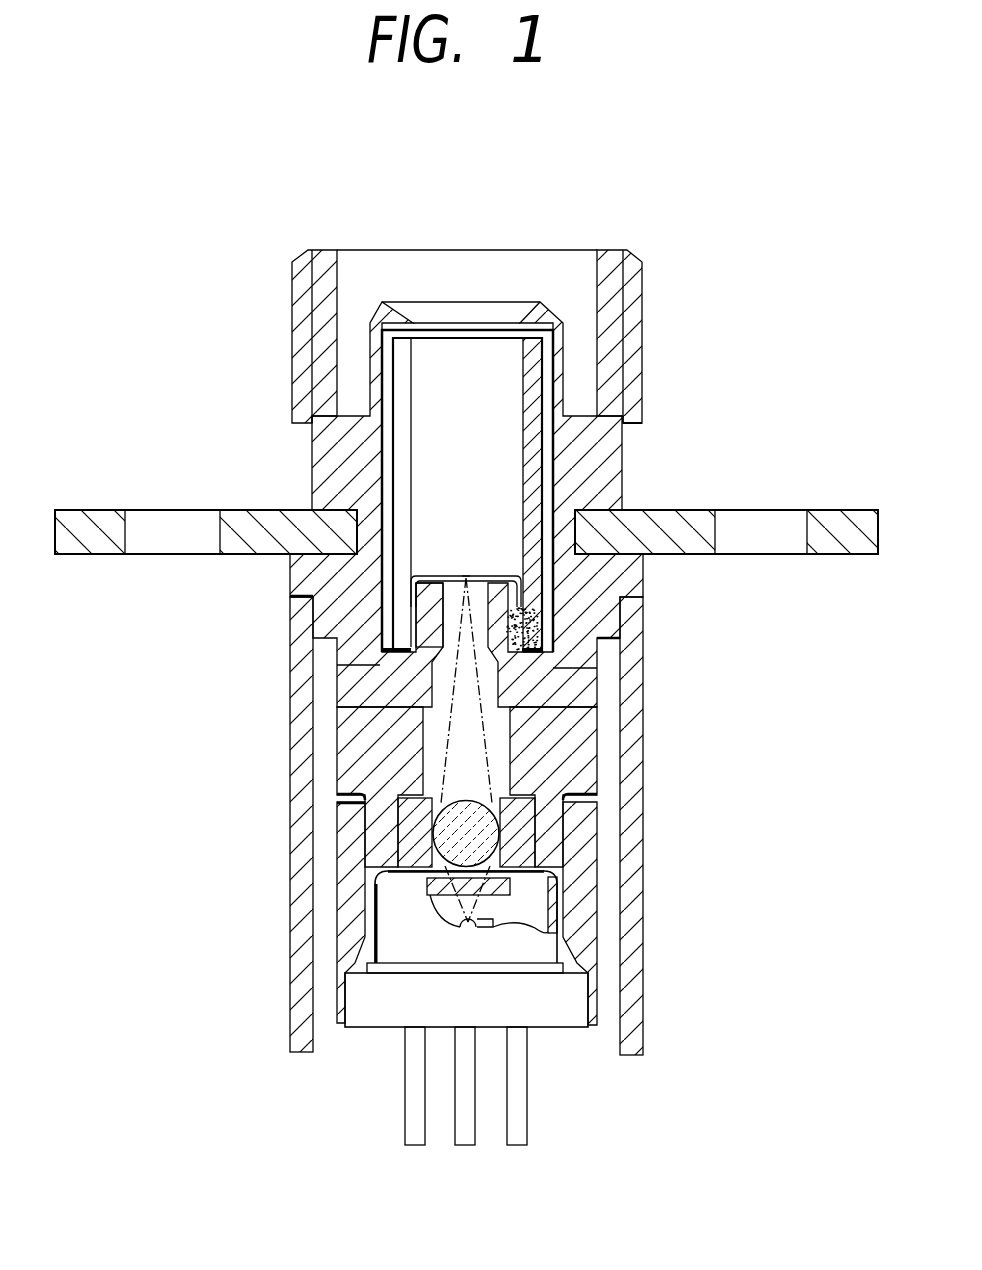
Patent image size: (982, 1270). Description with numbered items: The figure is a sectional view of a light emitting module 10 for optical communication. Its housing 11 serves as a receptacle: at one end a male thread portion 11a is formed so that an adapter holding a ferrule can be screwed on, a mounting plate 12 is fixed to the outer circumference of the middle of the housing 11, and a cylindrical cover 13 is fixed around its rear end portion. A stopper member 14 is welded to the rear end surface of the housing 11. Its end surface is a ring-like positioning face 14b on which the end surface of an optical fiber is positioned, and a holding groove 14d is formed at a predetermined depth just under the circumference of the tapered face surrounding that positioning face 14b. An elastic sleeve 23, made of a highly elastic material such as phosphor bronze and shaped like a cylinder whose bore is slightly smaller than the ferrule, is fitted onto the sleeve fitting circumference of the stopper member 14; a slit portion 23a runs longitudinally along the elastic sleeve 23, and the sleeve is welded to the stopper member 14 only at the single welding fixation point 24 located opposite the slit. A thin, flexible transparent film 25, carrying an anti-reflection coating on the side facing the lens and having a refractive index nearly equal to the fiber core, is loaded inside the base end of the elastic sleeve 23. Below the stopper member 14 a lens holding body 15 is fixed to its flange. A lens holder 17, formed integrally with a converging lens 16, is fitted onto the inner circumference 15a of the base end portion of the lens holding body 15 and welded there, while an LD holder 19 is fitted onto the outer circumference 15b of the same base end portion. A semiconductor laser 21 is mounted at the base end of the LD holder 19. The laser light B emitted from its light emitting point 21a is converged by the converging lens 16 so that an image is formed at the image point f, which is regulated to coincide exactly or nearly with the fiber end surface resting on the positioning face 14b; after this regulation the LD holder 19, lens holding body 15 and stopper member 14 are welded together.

The light emitting module 10 is at (381, 240).
The housing 11 is at (617, 290).
The male thread portion 11a is at (645, 363).
The mounting plate 12 is at (828, 527).
The cylindrical cover 13 is at (297, 1023).
The stopper member 14 is at (355, 691).
The positioning face 14b is at (467, 578).
The holding groove 14d is at (415, 616).
The lens holding body 15 is at (357, 768).
The inner circumference 15a is at (515, 822).
The outer circumference 15b is at (363, 838).
The converging lens 16 is at (487, 833).
The lens holder 17 is at (522, 780).
The LD holder 19 is at (583, 933).
The semiconductor laser 21 is at (558, 1007).
The light emitting point 21a is at (467, 930).
The elastic sleeve 23 is at (475, 353).
The slit portion 23a is at (405, 387).
The welding fixation point 24 is at (540, 628).
The transparent film 25 is at (512, 575).
The laser light B is at (487, 753).
The image point f is at (462, 576).